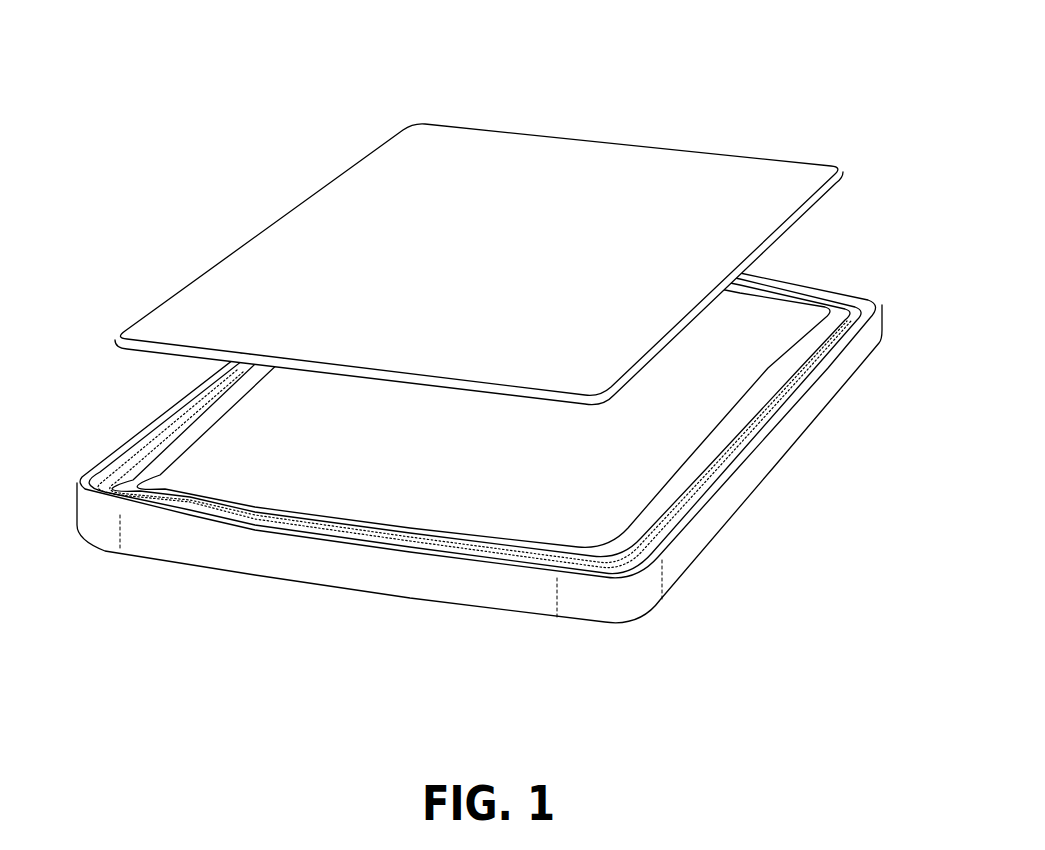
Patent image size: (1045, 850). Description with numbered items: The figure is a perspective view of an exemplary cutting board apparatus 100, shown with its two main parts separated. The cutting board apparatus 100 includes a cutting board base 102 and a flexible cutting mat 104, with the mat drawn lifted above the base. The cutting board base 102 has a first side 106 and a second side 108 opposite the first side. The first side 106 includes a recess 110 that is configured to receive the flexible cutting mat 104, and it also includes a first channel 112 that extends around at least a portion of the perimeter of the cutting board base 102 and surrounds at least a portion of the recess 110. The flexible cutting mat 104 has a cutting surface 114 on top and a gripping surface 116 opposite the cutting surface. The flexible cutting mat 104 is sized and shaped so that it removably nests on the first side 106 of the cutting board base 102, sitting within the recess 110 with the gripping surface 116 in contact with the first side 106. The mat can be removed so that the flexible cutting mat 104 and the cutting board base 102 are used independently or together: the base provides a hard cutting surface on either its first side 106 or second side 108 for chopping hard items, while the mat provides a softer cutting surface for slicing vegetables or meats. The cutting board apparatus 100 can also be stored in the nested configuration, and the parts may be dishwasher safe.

The cutting board apparatus 100 is at (485, 347).
The cutting board base 102 is at (501, 461).
The flexible cutting mat 104 is at (449, 239).
The first side 106 is at (766, 330).
The second side 108 is at (796, 461).
The recess 110 is at (562, 450).
The first channel 112 is at (661, 527).
The cutting surface 114 is at (552, 168).
The gripping surface 116 is at (187, 354).